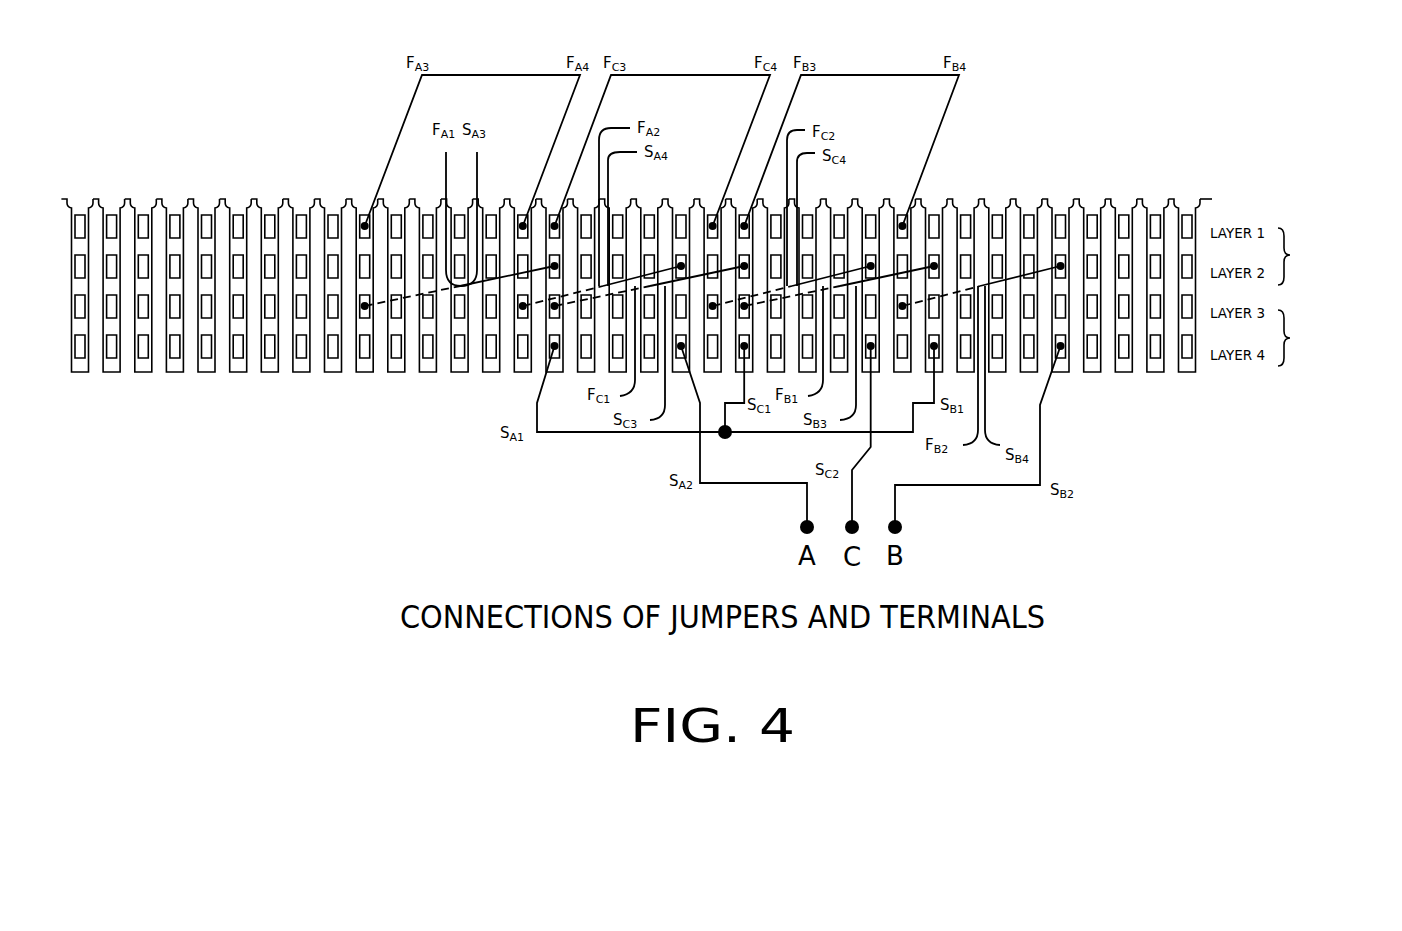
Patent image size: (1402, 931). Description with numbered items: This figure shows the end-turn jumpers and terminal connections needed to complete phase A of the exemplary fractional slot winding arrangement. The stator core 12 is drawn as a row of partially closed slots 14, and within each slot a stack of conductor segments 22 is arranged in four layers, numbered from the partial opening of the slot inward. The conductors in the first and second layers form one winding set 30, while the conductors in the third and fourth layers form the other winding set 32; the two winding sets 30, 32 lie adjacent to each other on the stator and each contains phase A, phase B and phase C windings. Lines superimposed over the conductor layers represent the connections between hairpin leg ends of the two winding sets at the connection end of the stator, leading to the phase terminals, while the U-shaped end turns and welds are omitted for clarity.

The stator core 12 is at (636, 336).
The partially closed slots 14 is at (240, 208).
The conductor segments 22 is at (240, 226).
The inner winding set 30 is at (1333, 235).
The outer winding set 32 is at (1345, 368).